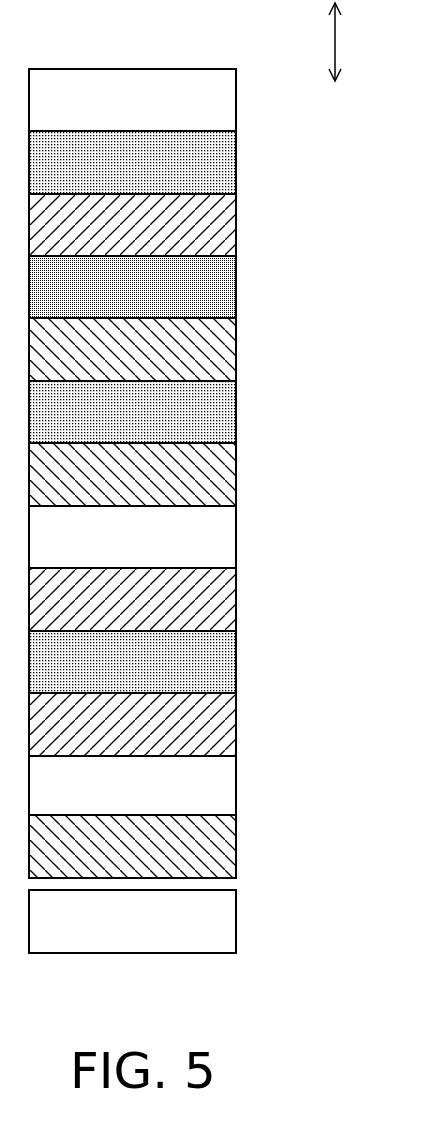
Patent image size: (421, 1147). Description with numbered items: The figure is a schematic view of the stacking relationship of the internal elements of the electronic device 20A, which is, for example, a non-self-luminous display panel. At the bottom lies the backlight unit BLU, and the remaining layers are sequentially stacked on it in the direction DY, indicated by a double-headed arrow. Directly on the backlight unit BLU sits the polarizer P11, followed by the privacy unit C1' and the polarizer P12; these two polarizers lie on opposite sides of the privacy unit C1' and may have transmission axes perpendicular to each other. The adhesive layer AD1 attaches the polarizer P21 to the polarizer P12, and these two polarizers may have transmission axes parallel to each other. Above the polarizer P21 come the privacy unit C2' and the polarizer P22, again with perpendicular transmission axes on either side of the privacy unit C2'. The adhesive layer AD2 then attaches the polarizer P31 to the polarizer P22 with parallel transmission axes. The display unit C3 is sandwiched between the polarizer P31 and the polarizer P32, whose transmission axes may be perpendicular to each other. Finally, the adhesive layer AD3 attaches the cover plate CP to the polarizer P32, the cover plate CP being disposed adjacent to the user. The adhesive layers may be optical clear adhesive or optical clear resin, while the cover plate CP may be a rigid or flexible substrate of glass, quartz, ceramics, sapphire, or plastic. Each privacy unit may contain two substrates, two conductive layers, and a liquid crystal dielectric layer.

The cover plate CP is at (228, 100).
The adhesive layer AD3 is at (228, 162).
The polarizer P32 is at (228, 225).
The display unit C3 is at (228, 287).
The polarizer P31 is at (228, 349).
The adhesive layer AD2 is at (228, 412).
The polarizer P22 is at (228, 474).
The privacy unit C2' is at (161, 537).
The polarizer P21 is at (228, 599).
The adhesive layer AD1 is at (228, 662).
The polarizer P12 is at (228, 724).
The privacy unit C1' is at (161, 785).
The polarizer P11 is at (228, 846).
The backlight unit BLU is at (228, 921).
The direction DY is at (334, 31).
The electronic device 20A is at (320, 1015).